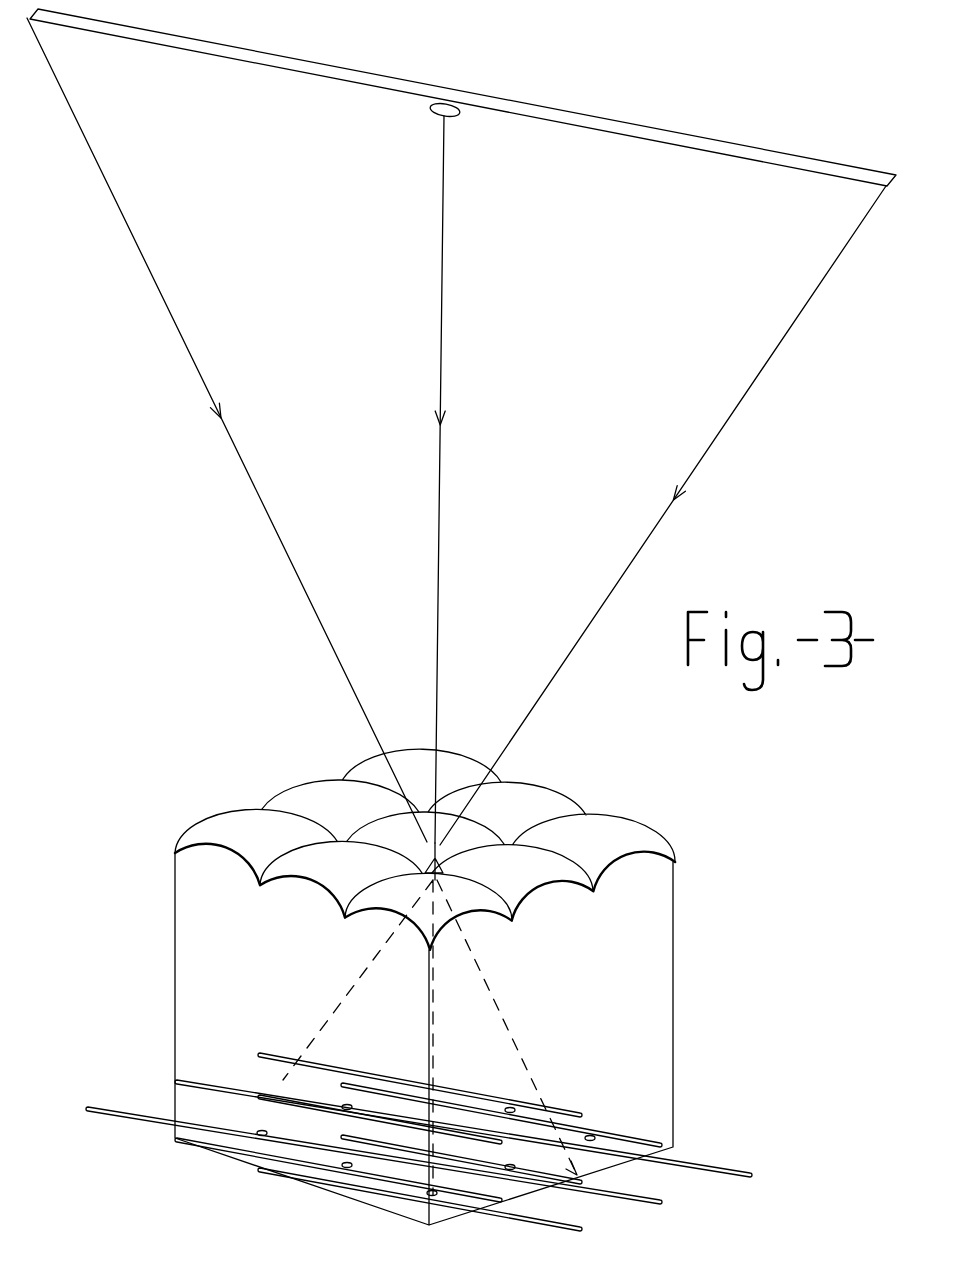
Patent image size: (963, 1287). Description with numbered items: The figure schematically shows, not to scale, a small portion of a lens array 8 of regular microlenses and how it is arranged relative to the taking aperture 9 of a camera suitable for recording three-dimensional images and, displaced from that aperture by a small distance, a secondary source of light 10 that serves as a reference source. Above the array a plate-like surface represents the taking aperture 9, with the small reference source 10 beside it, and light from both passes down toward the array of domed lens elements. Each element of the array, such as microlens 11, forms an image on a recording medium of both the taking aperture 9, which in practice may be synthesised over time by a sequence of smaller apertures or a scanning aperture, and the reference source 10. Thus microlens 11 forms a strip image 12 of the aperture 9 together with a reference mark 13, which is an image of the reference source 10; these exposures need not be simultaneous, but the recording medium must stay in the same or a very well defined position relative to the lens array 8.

The lens array 8 is at (648, 887).
The taking aperture 9 is at (748, 152).
The secondary source of light 10 is at (432, 111).
The microlens 11 is at (402, 833).
The strip image 12 is at (573, 1180).
The reference mark 13 is at (467, 1093).